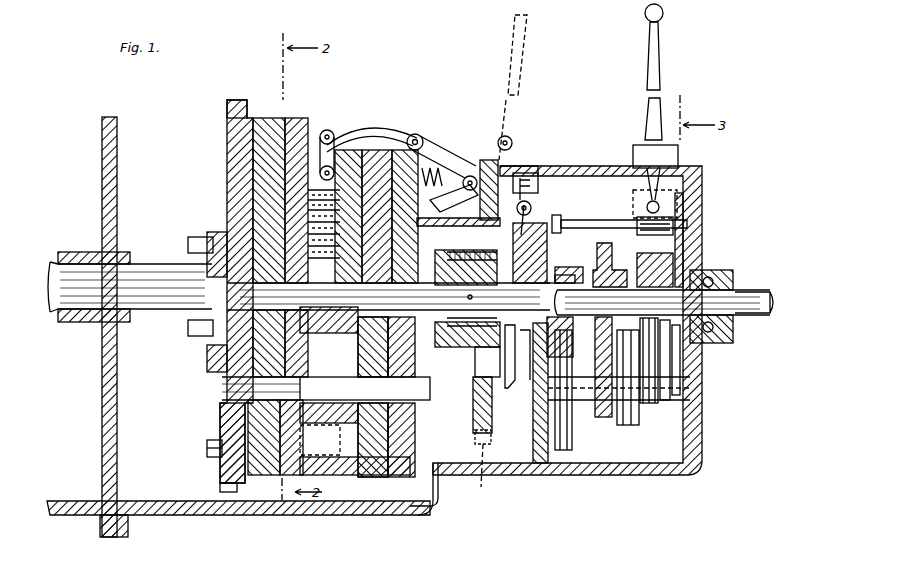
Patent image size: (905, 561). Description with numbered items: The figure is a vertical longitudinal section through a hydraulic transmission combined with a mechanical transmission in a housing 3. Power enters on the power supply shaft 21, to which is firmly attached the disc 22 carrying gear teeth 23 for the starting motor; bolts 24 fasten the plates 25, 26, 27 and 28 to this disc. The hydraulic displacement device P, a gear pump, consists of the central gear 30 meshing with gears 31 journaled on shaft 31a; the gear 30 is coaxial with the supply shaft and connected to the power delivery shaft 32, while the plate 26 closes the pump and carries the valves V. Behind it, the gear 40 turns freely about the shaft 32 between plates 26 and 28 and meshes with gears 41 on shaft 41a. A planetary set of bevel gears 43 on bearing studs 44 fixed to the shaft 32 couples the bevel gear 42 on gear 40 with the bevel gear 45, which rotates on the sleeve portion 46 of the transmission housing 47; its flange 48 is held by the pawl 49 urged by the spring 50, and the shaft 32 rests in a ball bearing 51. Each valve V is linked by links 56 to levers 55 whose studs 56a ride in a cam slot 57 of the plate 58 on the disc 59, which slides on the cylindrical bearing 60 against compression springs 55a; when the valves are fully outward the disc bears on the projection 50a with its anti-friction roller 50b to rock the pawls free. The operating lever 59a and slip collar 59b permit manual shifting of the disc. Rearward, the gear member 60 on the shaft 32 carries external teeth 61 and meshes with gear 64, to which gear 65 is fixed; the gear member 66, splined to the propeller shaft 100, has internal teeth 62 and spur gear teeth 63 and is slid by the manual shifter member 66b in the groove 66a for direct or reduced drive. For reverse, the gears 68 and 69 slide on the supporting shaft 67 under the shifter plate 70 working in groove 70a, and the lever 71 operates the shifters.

The gear housing / section line 3- 3 is at (691, 435).
The power supply shaft 21 is at (92, 256).
The disc 22 is at (228, 128).
The gear teeth 23 is at (236, 100).
The bolts 24 is at (212, 457).
The plate 25 is at (268, 118).
The plate 26 is at (296, 118).
The plate 27 is at (368, 150).
The plate 28 is at (405, 150).
The central gear 30 is at (263, 245).
The gears 31 is at (240, 410).
The shaft 31a is at (230, 388).
The power delivery shaft 32 is at (415, 300).
The gear 40 is at (450, 335).
The gears 41 is at (395, 408).
The shaft 41a is at (400, 388).
The bevel gear 42 is at (447, 260).
The bevel gears 43 is at (470, 252).
The bearing studs 44 is at (456, 301).
The bevel gear 45 is at (500, 372).
The sleeve portion 46 is at (512, 390).
The transmission housing 47 is at (548, 243).
The flange 48 is at (528, 382).
The locking or braking pawl 49 is at (532, 212).
The spring 50 is at (540, 184).
The projection 50a is at (521, 170).
The anti-friction roller 50b is at (512, 172).
The ball bearing 51 is at (555, 262).
The levers 55 is at (385, 128).
The compression springs 55a is at (430, 160).
The links 56 is at (334, 128).
The studs 56a is at (470, 176).
The cam slot 57 is at (448, 192).
The plate 58 is at (458, 205).
The disc 59 is at (492, 425).
The operating lever 59a is at (522, 72).
The slip collar 59b is at (496, 472).
The cylindrical bearing / gear member 60 is at (560, 270).
The external teeth 61 is at (618, 358).
The internal teeth 62 is at (560, 278).
The spur gear teeth 63 is at (602, 243).
The gear 64 is at (572, 440).
The gear 65 is at (632, 421).
The gear member 66 is at (620, 270).
The groove 66a is at (660, 277).
The manual shifter member 66b is at (640, 248).
The supporting shaft 67 is at (680, 358).
The smaller gear 68 is at (612, 360).
The larger gear 69 is at (660, 375).
The shifter plate 70 is at (663, 302).
The groove 70a is at (695, 348).
The lever 71 is at (660, 105).
The propeller shaft 100 is at (752, 293).
The hydraulic displacement device P is at (228, 376).
The valves V is at (318, 192).